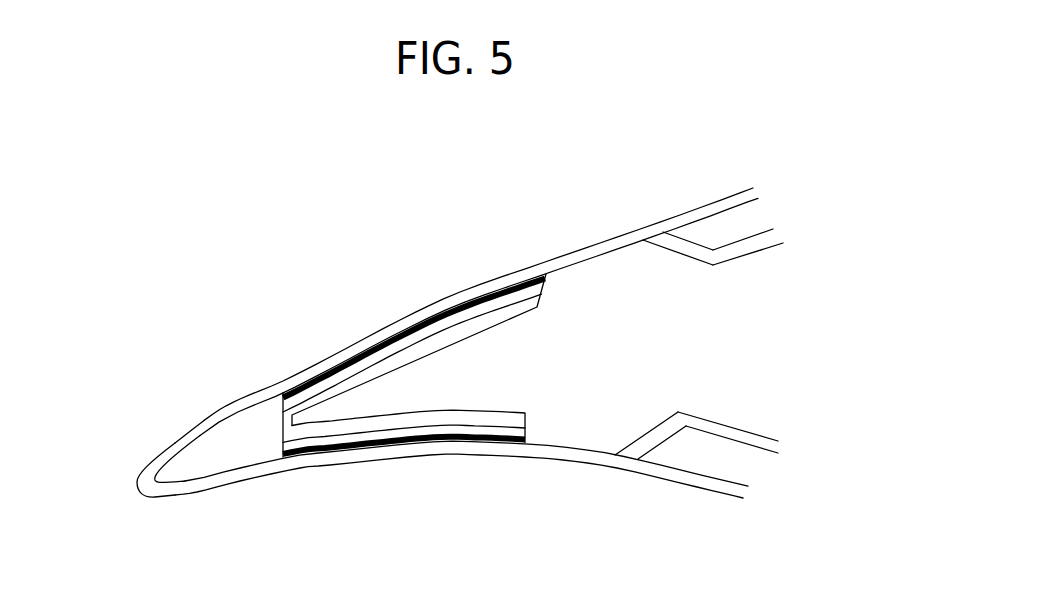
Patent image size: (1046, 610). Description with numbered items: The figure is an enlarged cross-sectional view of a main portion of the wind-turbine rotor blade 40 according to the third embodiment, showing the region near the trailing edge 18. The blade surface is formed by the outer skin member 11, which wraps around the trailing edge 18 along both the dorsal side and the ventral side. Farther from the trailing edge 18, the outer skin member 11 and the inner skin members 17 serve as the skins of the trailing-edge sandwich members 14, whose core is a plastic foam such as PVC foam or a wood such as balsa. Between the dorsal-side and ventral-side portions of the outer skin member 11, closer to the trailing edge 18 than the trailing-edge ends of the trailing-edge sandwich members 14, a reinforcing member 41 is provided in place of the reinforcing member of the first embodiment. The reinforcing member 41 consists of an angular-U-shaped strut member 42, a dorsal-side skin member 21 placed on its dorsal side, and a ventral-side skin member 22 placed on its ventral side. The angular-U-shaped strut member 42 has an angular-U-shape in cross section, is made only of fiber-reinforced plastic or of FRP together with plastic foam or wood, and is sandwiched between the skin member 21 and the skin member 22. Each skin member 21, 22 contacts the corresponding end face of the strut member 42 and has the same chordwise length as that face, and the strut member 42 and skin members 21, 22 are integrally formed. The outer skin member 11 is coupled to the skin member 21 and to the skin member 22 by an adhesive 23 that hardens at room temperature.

The outer skin member 11 is at (583, 250).
The trailing-edge sandwich member 14 is at (728, 222).
The inner skin member 17 is at (750, 251).
The trailing edge 18 is at (138, 488).
The skin member 21 is at (545, 287).
The skin member 22 is at (527, 432).
The adhesive 23 is at (376, 345).
The wind-turbine rotor blade 40 is at (236, 196).
The reinforcing member 41 is at (593, 298).
The angular-U-shaped strut member 42 is at (493, 318).